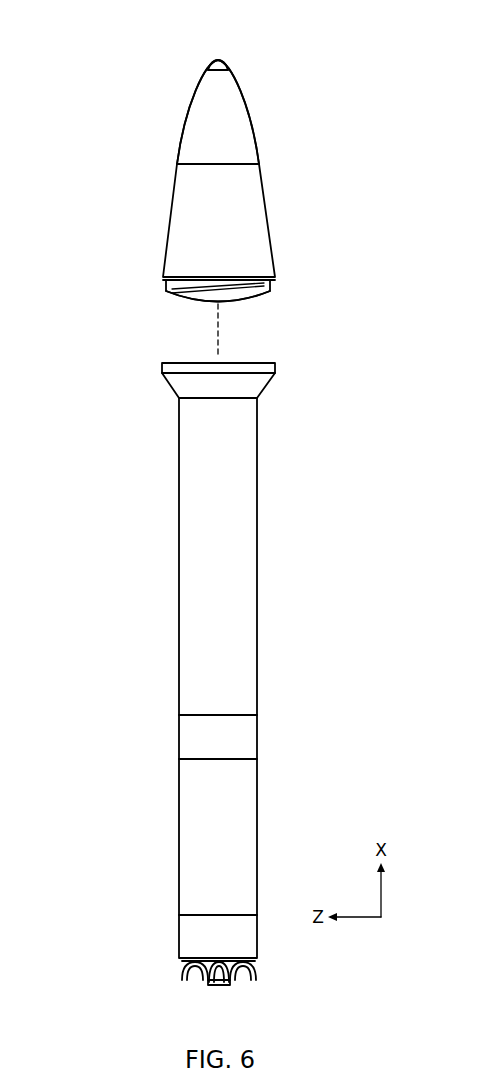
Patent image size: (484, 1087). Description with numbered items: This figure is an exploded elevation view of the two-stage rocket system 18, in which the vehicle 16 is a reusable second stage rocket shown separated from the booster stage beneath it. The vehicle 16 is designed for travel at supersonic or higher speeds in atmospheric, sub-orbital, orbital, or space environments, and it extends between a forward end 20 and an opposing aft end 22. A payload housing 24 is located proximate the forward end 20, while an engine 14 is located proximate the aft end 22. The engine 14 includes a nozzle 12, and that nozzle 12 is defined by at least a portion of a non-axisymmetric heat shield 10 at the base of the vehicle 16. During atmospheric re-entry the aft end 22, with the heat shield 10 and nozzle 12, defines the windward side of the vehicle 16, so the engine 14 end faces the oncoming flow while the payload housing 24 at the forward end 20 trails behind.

The non-axisymmetric heat shield 10 is at (194, 305).
The nozzle 12 is at (284, 288).
The engine 14 is at (294, 320).
The vehicle 16 is at (362, 58).
The two-stage rocket system 18 is at (107, 63).
The forward end 20 is at (223, 63).
The aft end 22 is at (226, 296).
The payload housing 24 is at (238, 112).